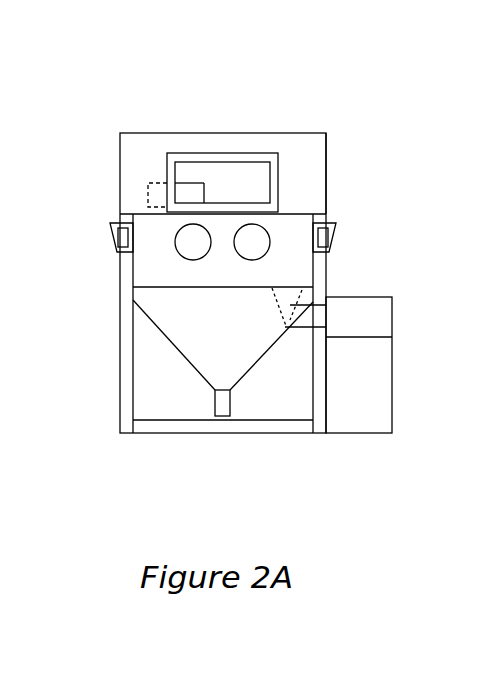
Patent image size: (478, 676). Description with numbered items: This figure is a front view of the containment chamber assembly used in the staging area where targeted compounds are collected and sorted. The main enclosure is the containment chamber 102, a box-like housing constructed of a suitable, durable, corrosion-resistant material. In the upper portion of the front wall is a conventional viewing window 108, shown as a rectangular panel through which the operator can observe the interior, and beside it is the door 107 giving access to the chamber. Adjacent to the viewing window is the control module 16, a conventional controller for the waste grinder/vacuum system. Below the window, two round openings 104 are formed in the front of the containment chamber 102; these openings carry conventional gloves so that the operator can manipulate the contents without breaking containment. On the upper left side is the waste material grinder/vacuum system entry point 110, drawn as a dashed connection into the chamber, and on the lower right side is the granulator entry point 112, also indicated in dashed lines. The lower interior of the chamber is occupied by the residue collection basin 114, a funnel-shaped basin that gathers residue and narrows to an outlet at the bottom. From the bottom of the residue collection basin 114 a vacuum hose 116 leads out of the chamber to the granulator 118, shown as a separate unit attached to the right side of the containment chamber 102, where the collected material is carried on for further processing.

The control module 16 is at (263, 250).
The containment chamber 102 is at (118, 325).
The openings 104 is at (252, 243).
The door 107 is at (327, 148).
The viewing window 108 is at (235, 172).
The waste material grinder/vacuum system entry point 110 is at (155, 197).
The granulator entry point 112 is at (292, 283).
The residue collection basin 114 is at (180, 328).
The vacuum hose 116 is at (222, 400).
The granulator 118 is at (359, 365).